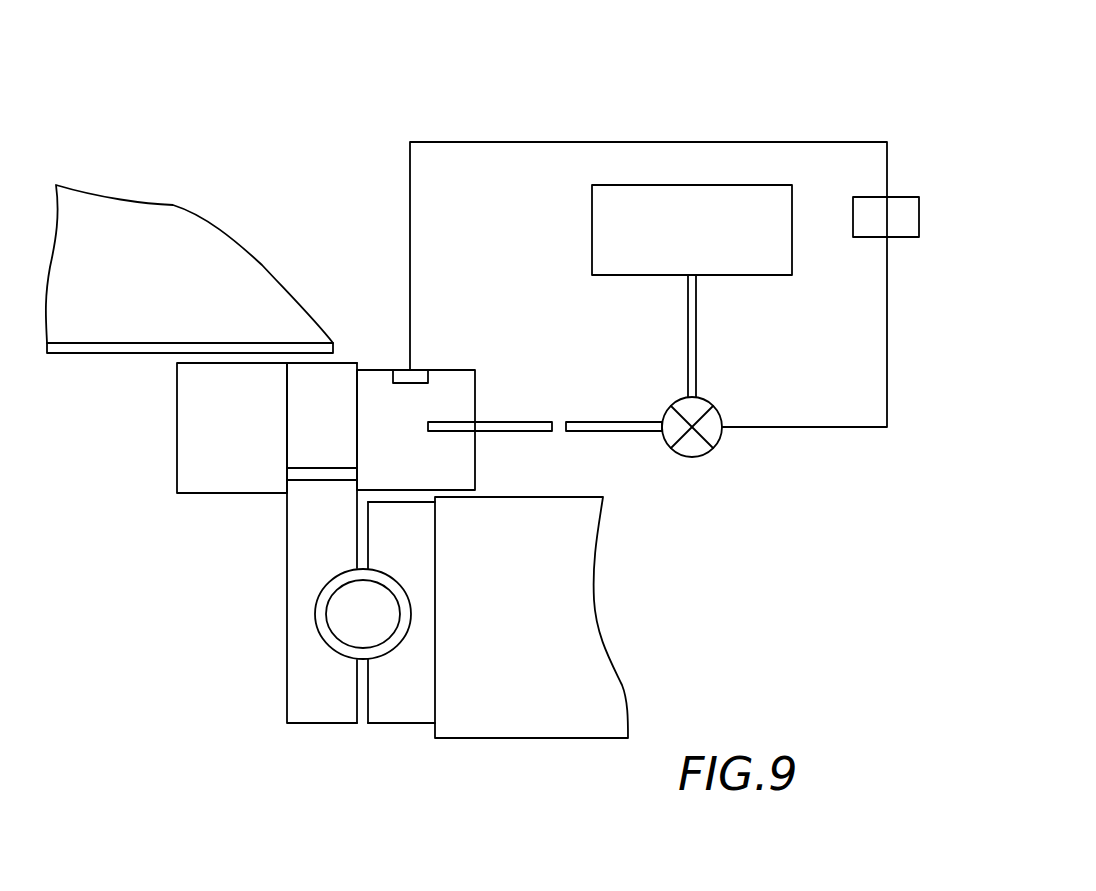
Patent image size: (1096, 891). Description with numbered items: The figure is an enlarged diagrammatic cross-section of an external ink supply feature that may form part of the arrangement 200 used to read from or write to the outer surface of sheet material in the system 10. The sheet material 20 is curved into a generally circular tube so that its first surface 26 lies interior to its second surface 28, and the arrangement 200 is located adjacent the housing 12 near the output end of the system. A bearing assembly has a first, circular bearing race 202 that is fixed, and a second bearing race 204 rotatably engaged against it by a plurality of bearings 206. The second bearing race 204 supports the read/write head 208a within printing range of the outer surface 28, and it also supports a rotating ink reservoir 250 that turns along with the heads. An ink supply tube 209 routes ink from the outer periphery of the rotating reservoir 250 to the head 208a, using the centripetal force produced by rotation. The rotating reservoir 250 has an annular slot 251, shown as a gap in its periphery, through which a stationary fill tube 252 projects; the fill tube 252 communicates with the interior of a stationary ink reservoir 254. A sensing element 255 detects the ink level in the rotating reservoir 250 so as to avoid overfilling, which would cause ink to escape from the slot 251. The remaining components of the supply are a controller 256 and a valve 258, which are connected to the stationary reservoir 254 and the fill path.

The system 10 is at (800, 107).
The housing 12 is at (597, 738).
The sheet material 20 is at (47, 317).
The first surface 26 is at (122, 345).
The second surface 28 is at (155, 355).
The arrangement 200 is at (398, 725).
The first bearing race 202 is at (415, 725).
The second bearing race 204 is at (287, 680).
The bearings 206 is at (325, 619).
The read/write head 208a is at (265, 423).
The ink supply tube 209 is at (317, 480).
The rotating ink reservoir 250 is at (450, 370).
The annular slot 251 is at (478, 434).
The fill tube 252 is at (548, 422).
The stationary ink reservoir 254 is at (722, 238).
The sensing element 255 is at (397, 370).
The controller 256 is at (867, 237).
The valve 258 is at (702, 453).